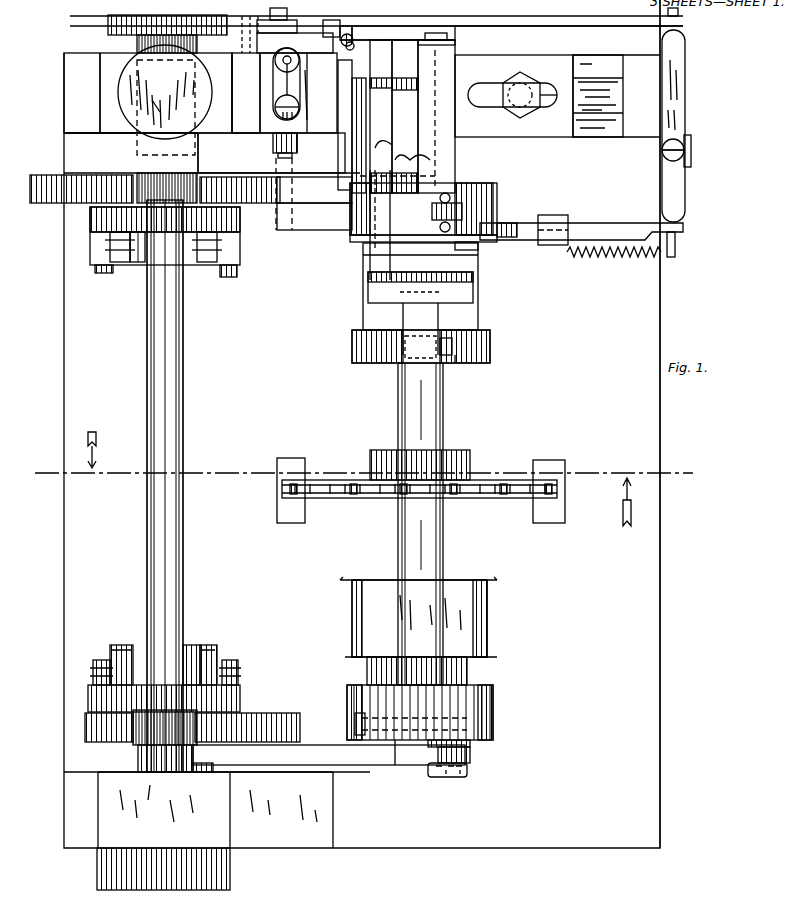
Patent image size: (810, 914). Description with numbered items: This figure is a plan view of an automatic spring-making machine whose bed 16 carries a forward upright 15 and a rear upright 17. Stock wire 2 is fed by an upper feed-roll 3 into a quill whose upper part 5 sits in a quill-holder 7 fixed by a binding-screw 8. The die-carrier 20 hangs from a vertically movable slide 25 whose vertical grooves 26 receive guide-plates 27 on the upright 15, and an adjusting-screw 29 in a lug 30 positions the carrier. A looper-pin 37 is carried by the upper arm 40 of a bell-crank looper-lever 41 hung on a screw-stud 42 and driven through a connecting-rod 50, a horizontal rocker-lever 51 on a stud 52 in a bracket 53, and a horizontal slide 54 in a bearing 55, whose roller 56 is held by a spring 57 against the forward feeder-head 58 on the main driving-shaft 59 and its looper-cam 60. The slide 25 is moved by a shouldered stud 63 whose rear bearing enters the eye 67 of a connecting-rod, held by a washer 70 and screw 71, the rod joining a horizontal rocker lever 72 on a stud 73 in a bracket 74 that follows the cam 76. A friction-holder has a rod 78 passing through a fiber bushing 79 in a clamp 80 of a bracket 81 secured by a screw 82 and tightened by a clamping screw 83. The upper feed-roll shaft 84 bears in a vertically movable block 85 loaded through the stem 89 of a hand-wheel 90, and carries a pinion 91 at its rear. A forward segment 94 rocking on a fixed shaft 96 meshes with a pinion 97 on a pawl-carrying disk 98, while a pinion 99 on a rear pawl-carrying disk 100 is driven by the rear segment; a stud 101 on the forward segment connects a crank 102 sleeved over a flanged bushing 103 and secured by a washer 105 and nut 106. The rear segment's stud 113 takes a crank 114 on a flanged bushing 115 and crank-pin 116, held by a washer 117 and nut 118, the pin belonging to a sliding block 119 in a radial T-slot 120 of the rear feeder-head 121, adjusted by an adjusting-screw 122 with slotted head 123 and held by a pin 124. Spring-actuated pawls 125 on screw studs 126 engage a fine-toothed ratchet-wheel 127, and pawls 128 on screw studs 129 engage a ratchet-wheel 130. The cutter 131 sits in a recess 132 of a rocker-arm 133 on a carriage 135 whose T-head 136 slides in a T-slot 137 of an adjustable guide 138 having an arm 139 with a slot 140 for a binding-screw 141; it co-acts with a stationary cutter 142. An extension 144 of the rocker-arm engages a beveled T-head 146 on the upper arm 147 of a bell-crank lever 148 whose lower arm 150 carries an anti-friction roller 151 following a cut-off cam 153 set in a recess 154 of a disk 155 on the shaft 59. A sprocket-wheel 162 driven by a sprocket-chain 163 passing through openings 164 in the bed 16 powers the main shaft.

The stock wire 2 is at (105, 17).
The upper feed-roll 3 is at (205, 17).
The upper part of quill 5 is at (237, 26).
The quill-holder 7 is at (248, 26).
The binding-screw 8 is at (260, 16).
The forward upright 15 is at (105, 78).
The machine-frame or bed 16 is at (645, 417).
The rear upright 17 is at (305, 812).
The die or anvil-carrier 20 is at (330, 18).
The vertically movable slide 25 is at (270, 65).
The vertical grooves 26 is at (273, 93).
The guide-plates 27 is at (246, 60).
The adjusting-screw 29 is at (373, 52).
The lug 30 is at (345, 125).
The looper-pin 37 is at (355, 38).
The upper arm 40 is at (350, 34).
The bell-crank looper-lever 41 is at (290, 16).
The screw-stud 42 is at (205, 60).
The connecting-rod 50 is at (500, 26).
The horizontal rocker-lever 51 is at (676, 126).
The stud 52 is at (668, 157).
The bracket 53 is at (620, 172).
The horizontal slide 54 is at (603, 232).
The bearing 55 is at (552, 215).
The roller 56 is at (508, 238).
The spring 57 is at (608, 262).
The forward feeder-head 58 is at (497, 208).
The main driving-shaft 59 is at (443, 410).
The looper-cam 60 is at (496, 248).
The shouldered stud 63 is at (275, 145).
The eye 67 is at (300, 146).
The washer 70 is at (228, 160).
The screw 71 is at (284, 195).
The horizontal rocker lever 72 is at (314, 190).
The stud 73 is at (318, 215).
The bracket 74 is at (298, 10).
The cam 76 is at (460, 210).
The rod 78 is at (236, 116).
The two-part fiber bushing 79 is at (282, 88).
The clamp 80 is at (266, 123).
The bracket 81 is at (279, 123).
The screw 82 is at (298, 123).
The clamping screw 83 is at (308, 112).
The upper feed-roll shaft 84 is at (192, 352).
The vertically movable block 85 is at (150, 156).
The stem 89 is at (150, 100).
The hand-wheel 90 is at (125, 90).
The pinion 91 is at (135, 875).
The forward segment 94 is at (45, 203).
The fixed shaft 96 is at (88, 728).
The pinion 97 is at (135, 190).
The pawl-carrying disk 98 is at (110, 235).
The pinion 99 is at (137, 728).
The pawl-carrying disk 100 is at (90, 700).
The stud 101 is at (165, 138).
The crank 102 is at (271, 153).
The flanged bushing 103 is at (440, 180).
The washer 105 is at (430, 160).
The nut 106 is at (445, 145).
The stud 113 is at (208, 775).
The crank 114 is at (310, 755).
The flanged bushing 115 is at (470, 743).
The crank-pin 116 is at (470, 757).
The washer 117 is at (467, 770).
The nut 118 is at (462, 777).
The sliding block 119 is at (467, 722).
The radial T-slot 120 is at (493, 700).
The feeder-head 121 is at (510, 668).
The adjusting-screw 122 is at (398, 765).
The slotted head 123 is at (355, 716).
The pin 124 is at (360, 740).
The spring-actuated pawls 125 is at (108, 252).
The screw studs 126 is at (100, 274).
The fine-toothed ratchet-wheel 127 is at (138, 262).
The spring-actuated pawls 128 is at (100, 660).
The screw studs 129 is at (118, 645).
The fine-toothed ratchet-wheel 130 is at (188, 660).
The cutter 131 is at (372, 58).
The recess 132 is at (364, 78).
The rocker-arm 133 is at (383, 116).
The carriage 135 is at (406, 116).
The T-head 136 is at (428, 42).
The T-slot 137 is at (438, 58).
The adjustable guide 138 is at (460, 85).
The arm 139 is at (600, 96).
The slot 140 is at (548, 105).
The binding-screw 141 is at (505, 118).
The stationary cutter 142 is at (430, 35).
The extension 144 is at (383, 225).
The beveled T-head 146 is at (457, 290).
The upper arm 147 is at (405, 258).
The bell-crank lever 148 is at (395, 250).
The lower arm 150 is at (405, 315).
The anti-friction roller 151 is at (405, 345).
The cut-off cam 153 is at (452, 343).
The recess 154 is at (462, 362).
The disk 155 is at (352, 350).
The sprocket-wheel 162 is at (362, 495).
The sprocket-chain 163 is at (490, 478).
The openings 164 is at (278, 518).